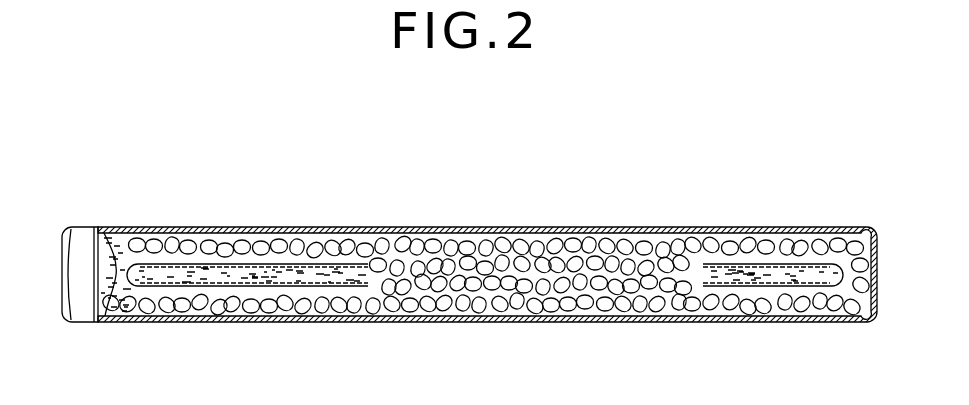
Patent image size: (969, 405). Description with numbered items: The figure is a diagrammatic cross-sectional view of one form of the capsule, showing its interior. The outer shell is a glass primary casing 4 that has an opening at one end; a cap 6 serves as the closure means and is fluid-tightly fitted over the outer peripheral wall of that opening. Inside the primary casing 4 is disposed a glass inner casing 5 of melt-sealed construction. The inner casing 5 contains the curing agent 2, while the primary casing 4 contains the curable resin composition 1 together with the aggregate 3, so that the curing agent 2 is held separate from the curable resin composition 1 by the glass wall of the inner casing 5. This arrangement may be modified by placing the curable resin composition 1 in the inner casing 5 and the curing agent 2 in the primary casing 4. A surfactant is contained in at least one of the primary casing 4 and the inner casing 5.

The curable resin composition 1 is at (123, 240).
The curing agent 2 is at (190, 277).
The aggregate 3 is at (415, 246).
The glass primary casing 4 is at (648, 230).
The glass inner casing 5 is at (296, 267).
The cap 6 is at (87, 245).